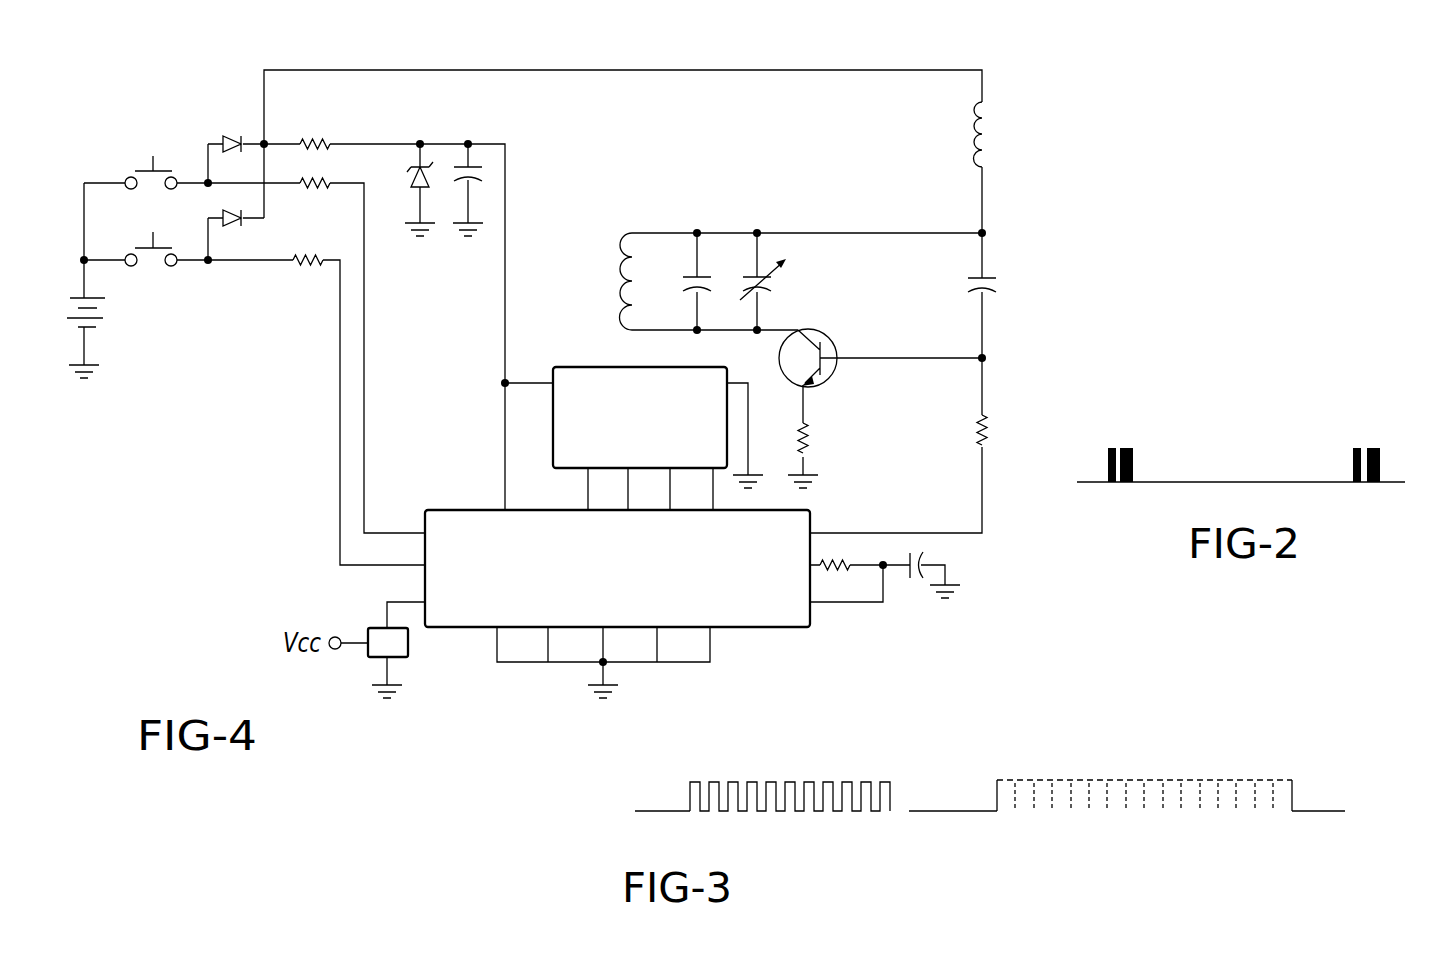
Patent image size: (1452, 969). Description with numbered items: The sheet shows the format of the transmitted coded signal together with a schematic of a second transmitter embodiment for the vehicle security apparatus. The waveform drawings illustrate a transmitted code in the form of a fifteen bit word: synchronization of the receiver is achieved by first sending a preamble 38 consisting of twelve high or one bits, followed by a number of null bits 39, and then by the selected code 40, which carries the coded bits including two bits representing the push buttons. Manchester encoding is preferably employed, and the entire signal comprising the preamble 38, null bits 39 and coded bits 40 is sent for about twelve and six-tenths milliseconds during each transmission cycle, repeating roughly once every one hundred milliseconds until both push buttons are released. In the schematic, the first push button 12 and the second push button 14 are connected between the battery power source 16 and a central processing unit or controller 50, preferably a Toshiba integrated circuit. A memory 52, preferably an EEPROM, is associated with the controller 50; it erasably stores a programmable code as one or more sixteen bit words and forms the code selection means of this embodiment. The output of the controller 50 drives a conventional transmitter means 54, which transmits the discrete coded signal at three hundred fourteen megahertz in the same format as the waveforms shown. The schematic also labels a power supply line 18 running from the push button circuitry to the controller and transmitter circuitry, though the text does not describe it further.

In FIG. 4, the first push button 12 is at (136, 168).
In FIG. 4, the second push button 14 is at (151, 264).
In FIG. 4, the battery power source 16 is at (110, 327).
In FIG. 4, the power supply line 18 is at (405, 43).
In FIG. 4, the controller 50 is at (770, 616).
In FIG. 4, the memory 52 is at (590, 367).
In FIG. 4, the transmitter means 54 is at (958, 334).
In FIG. 2, the preamble 38 is at (1113, 448).
In FIG. 3, the preamble 38 is at (748, 782).
In FIG. 3, the null bits 39 is at (923, 806).
In FIG. 2, the selected code 40 is at (1170, 425).
In FIG. 3, the selected code 40 is at (1058, 790).